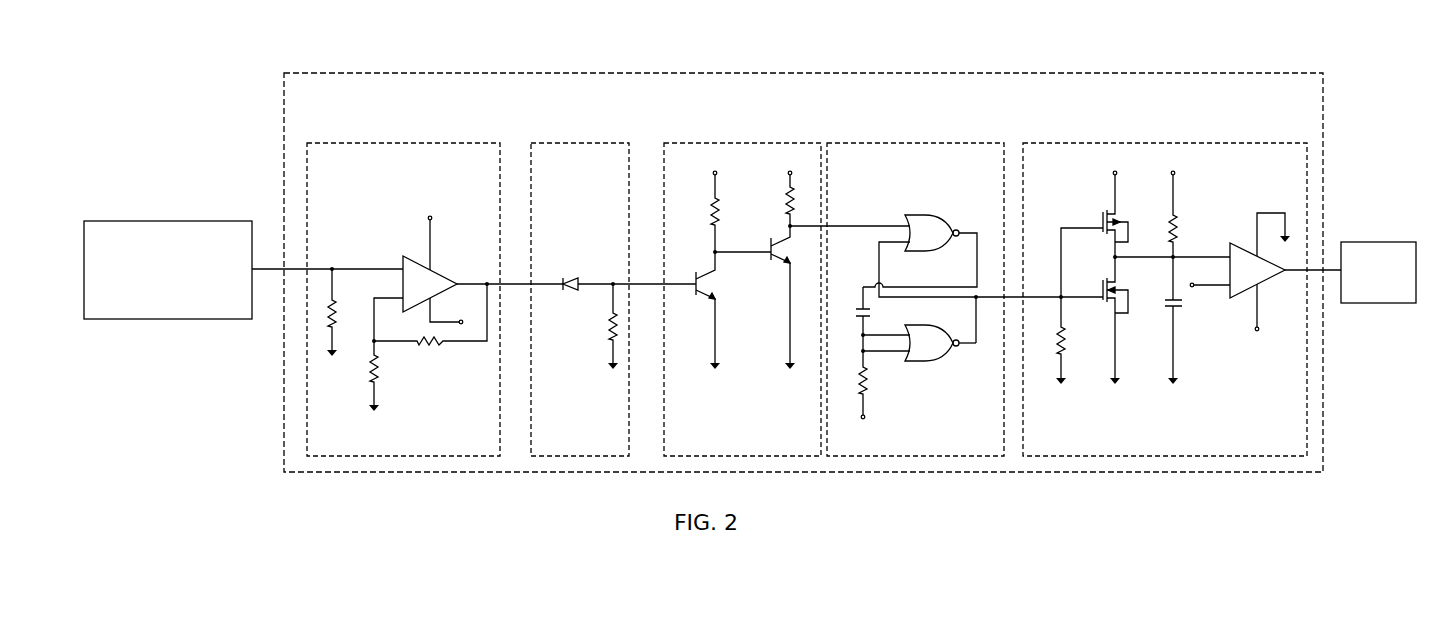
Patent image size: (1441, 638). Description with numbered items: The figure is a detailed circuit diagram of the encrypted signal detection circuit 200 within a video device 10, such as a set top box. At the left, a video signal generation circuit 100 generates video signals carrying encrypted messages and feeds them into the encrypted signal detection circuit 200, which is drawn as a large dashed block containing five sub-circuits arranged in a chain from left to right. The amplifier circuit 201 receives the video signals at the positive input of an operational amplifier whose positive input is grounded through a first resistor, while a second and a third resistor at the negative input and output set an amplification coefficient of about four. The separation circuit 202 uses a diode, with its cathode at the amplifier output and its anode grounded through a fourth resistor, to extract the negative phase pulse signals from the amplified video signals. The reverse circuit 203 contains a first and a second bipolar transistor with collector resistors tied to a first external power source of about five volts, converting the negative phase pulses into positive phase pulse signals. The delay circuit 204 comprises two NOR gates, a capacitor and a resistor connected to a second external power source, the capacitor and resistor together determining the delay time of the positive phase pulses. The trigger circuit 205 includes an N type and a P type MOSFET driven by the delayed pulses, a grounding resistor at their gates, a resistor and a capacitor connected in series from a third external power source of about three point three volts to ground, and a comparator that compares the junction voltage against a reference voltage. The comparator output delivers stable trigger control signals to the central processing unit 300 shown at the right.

The video device 10 is at (880, 40).
The video signal generation circuit 100 is at (168, 221).
The encrypted signal detection circuit 200 is at (737, 73).
The amplifier circuit 201 is at (415, 143).
The separation circuit 202 is at (597, 143).
The reverse circuit 203 is at (752, 143).
The delay circuit 204 is at (920, 143).
The trigger circuit 205 is at (1183, 143).
The central processing unit (CPU) 300 is at (1373, 242).